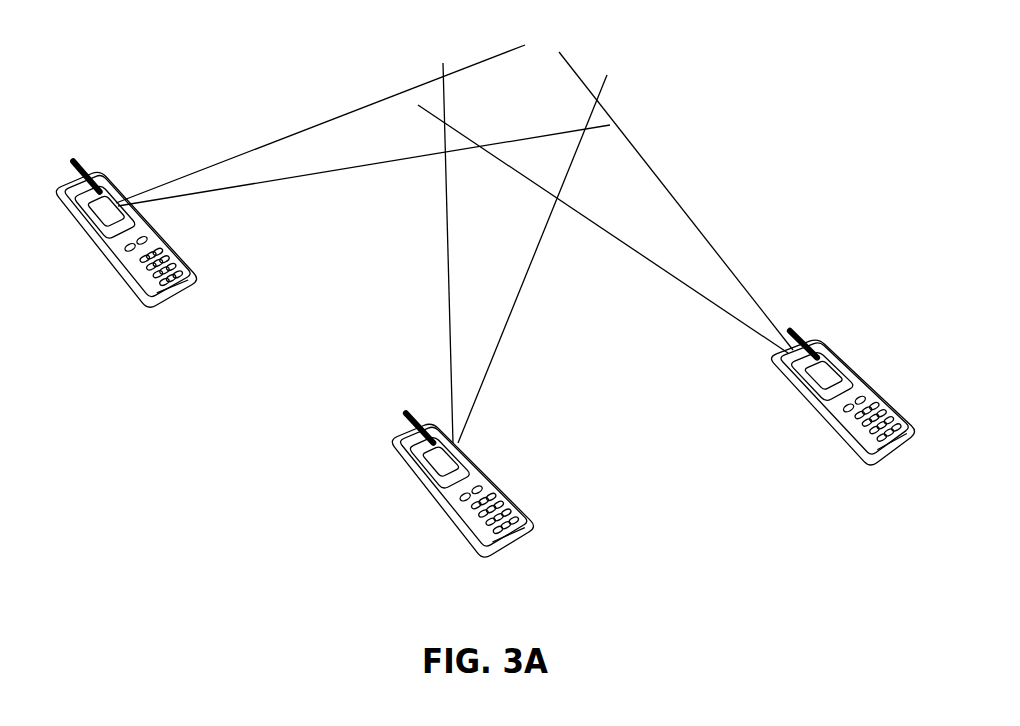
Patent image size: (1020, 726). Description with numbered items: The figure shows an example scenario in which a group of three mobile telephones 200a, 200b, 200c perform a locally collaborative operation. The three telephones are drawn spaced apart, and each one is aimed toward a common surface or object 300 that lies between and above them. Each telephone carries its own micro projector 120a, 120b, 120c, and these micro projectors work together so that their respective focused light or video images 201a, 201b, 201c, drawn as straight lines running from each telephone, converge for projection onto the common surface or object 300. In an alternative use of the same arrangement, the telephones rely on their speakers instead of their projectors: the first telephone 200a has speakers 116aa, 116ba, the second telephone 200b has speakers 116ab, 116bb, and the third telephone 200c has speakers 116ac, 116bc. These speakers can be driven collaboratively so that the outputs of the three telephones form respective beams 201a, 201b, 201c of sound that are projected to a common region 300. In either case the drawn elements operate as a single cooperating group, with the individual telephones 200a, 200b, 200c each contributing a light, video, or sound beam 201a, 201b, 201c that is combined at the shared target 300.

The common surface or object 300 is at (547, 95).
The mobile telephone 200a is at (148, 208).
The mobile telephone 200b is at (447, 469).
The mobile telephone 200c is at (786, 406).
The micro projector 120a is at (118, 194).
The micro projector 120b is at (460, 447).
The micro projector 120c is at (836, 368).
The speaker 116aa is at (95, 135).
The speaker 116ba is at (95, 135).
The speaker 116ab is at (378, 397).
The speaker 116bb is at (378, 397).
The speaker 116ac is at (737, 369).
The speaker 116bc is at (787, 340).
The focused light or video image 201a is at (295, 170).
The focused light or video image 201b is at (490, 325).
The focused light or video image 201c is at (694, 247).